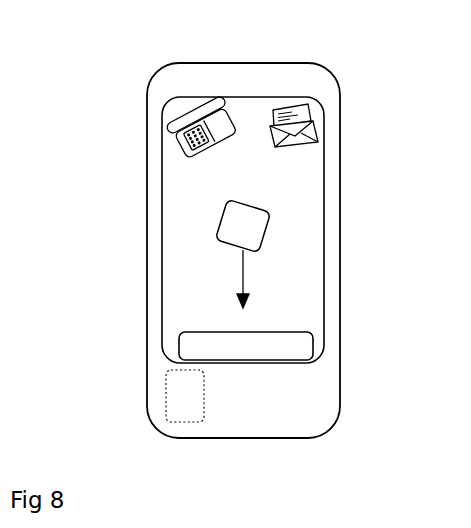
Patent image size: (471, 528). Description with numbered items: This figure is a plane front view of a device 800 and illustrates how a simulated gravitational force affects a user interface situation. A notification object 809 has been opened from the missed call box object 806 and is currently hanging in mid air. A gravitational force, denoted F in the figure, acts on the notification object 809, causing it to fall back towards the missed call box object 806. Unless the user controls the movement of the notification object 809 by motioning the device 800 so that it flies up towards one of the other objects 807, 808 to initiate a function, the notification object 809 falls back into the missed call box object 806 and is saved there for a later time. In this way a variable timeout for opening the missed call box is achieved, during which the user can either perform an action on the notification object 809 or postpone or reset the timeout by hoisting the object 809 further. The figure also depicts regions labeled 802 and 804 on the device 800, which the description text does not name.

The device 800 is at (279, 58).
The display screen 802 is at (162, 123).
The input key area 804 is at (166, 408).
The missed call box object 806 is at (180, 337).
The object 807 is at (203, 100).
The object 808 is at (300, 98).
The notification object 809 is at (268, 228).